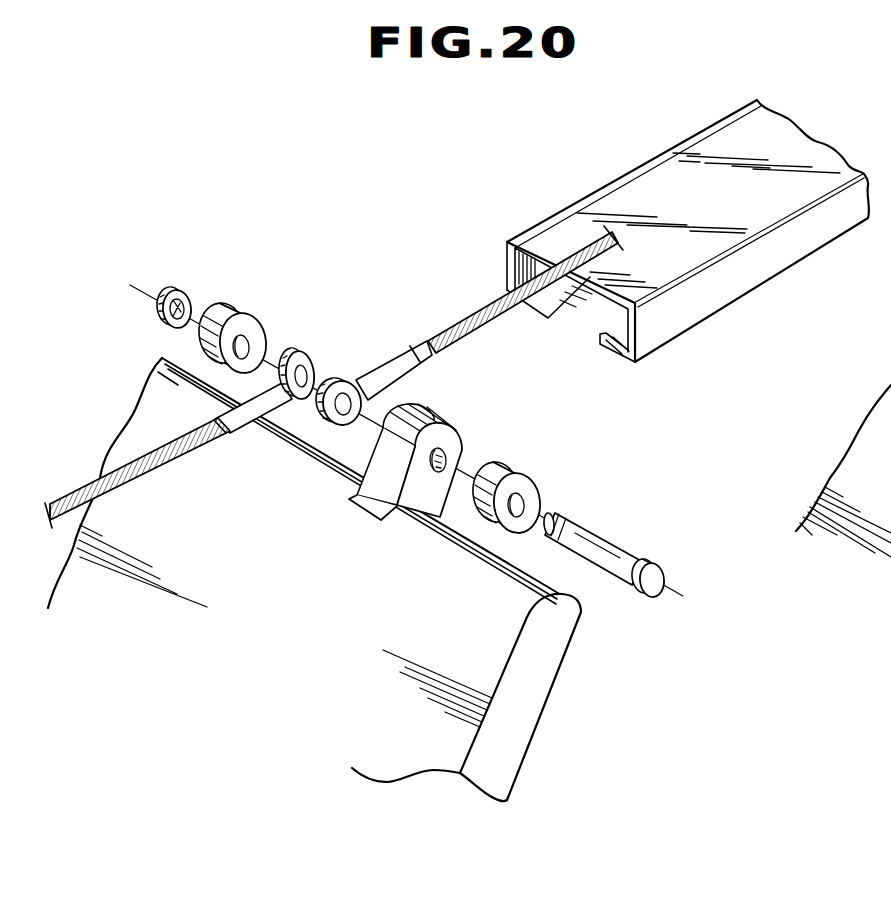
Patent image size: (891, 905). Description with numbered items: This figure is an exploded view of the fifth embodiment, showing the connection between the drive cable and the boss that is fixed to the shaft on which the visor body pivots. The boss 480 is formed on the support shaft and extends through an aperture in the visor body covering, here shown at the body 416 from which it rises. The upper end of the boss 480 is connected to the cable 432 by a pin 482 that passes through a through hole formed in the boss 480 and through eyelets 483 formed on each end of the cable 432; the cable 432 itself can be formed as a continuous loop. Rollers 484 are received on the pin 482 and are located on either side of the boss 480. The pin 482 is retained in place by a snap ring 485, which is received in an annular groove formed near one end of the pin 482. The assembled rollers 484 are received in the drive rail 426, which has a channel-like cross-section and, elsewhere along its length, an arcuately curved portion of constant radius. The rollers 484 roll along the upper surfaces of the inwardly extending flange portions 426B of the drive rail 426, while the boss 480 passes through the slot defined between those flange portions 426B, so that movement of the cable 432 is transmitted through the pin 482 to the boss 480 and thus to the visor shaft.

The plate 416 is at (568, 623).
The drive rail 426 is at (770, 263).
The inwardly extending flange portions 426B is at (541, 302).
The cable 432 is at (167, 458).
The boss 480 is at (430, 420).
The pin 482 is at (633, 557).
The eyelets 483 is at (350, 373).
The rollers 484 is at (238, 309).
The snap ring 485 is at (176, 290).